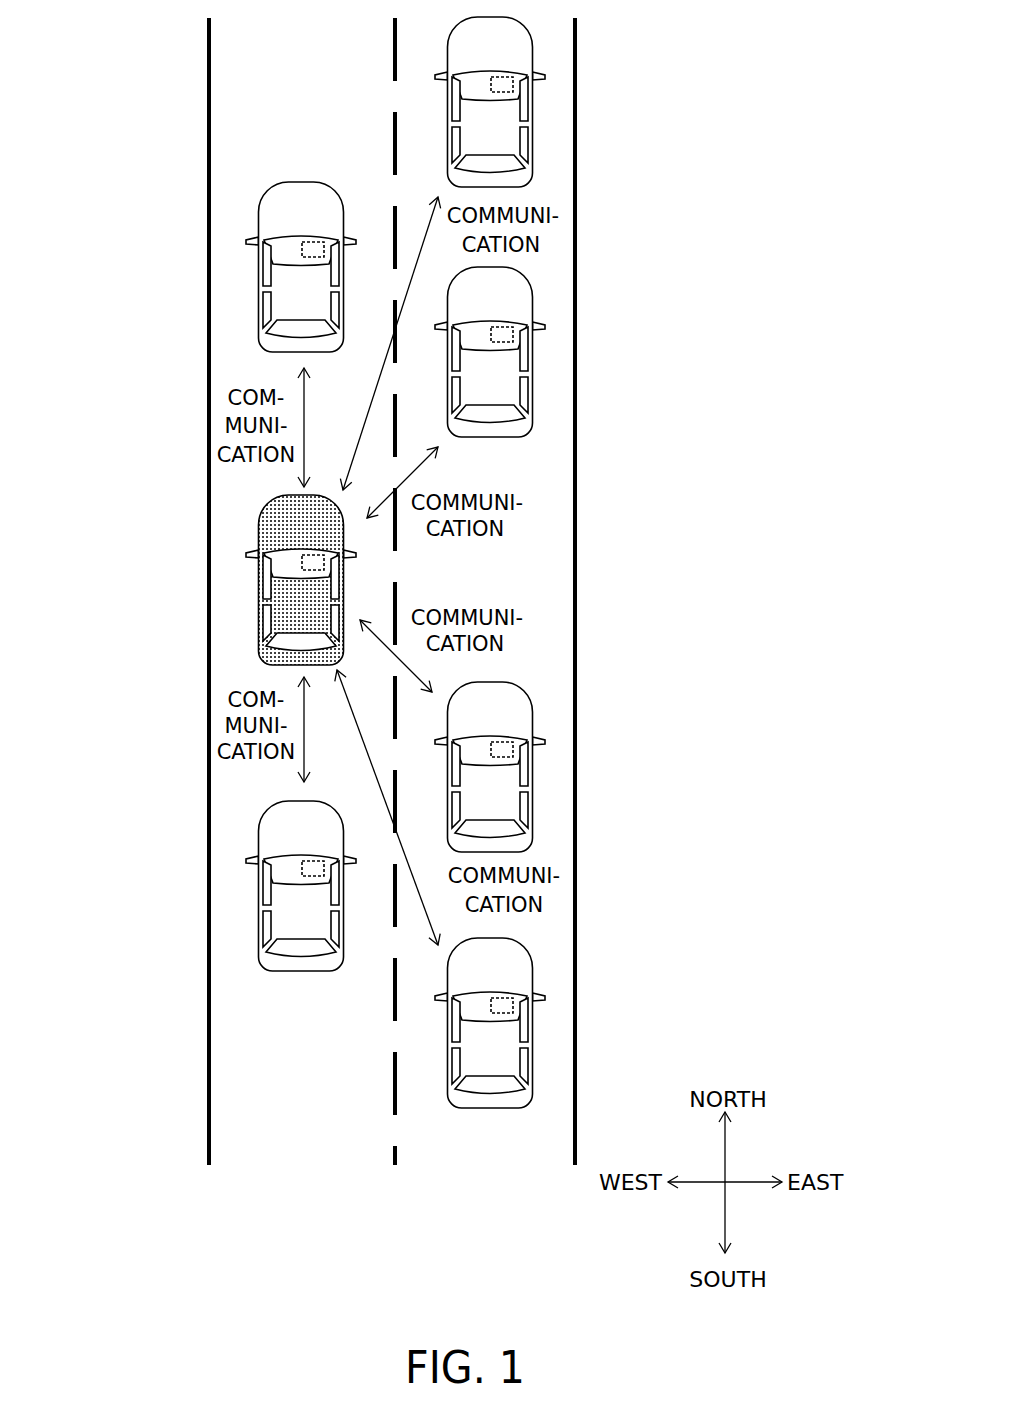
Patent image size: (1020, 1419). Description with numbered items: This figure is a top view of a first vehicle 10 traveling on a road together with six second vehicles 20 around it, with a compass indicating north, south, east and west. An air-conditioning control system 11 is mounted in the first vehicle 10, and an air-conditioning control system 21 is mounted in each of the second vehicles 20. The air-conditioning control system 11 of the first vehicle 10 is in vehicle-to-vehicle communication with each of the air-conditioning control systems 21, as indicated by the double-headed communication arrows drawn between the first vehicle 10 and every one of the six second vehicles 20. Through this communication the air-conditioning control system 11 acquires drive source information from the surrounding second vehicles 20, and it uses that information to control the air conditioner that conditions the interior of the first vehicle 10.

The first vehicle 10 is at (243, 513).
The air-conditioning control system 11 is at (302, 558).
The second vehicle 20 is at (554, 122).
The air-conditioning control system 21 is at (403, 542).